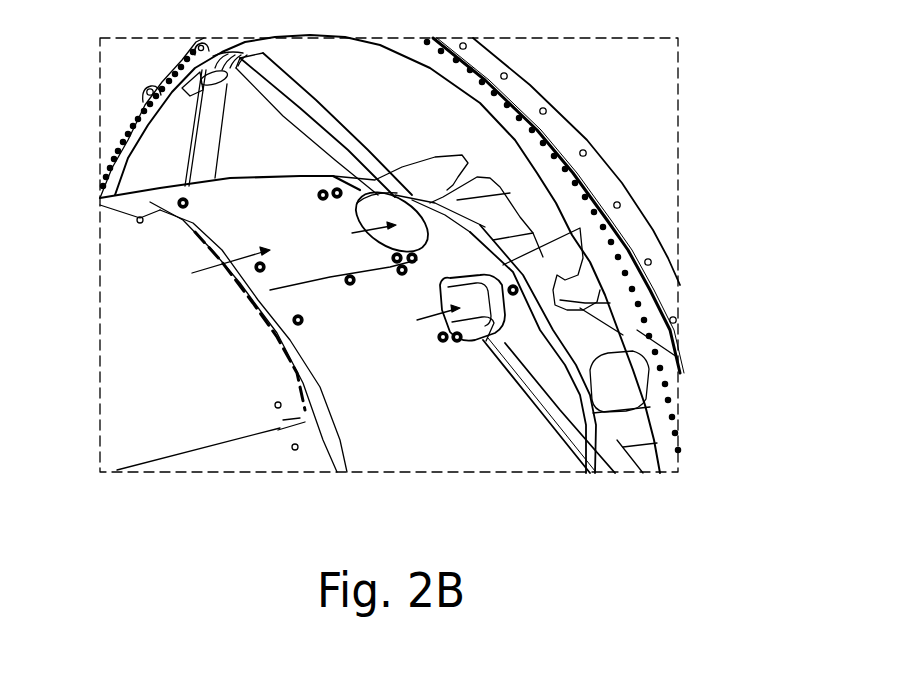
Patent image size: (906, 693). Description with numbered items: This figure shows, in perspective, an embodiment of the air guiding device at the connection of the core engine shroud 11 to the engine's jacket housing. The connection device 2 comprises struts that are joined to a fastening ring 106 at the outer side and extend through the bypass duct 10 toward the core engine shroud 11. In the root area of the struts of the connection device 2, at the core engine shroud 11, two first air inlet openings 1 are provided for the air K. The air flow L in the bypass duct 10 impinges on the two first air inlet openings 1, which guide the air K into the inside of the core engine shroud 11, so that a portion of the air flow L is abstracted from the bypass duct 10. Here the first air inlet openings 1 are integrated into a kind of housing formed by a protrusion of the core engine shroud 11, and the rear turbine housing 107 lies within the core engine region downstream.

The first air inlet opening 1 is at (539, 249).
The connection device 2 is at (660, 548).
The bypass duct 10 is at (366, 118).
The core engine shroud 11 is at (497, 446).
The fastening ring 106 is at (438, 254).
The rear turbine housing 107 is at (268, 337).
The air K is at (425, 260).
The air flow L is at (222, 270).